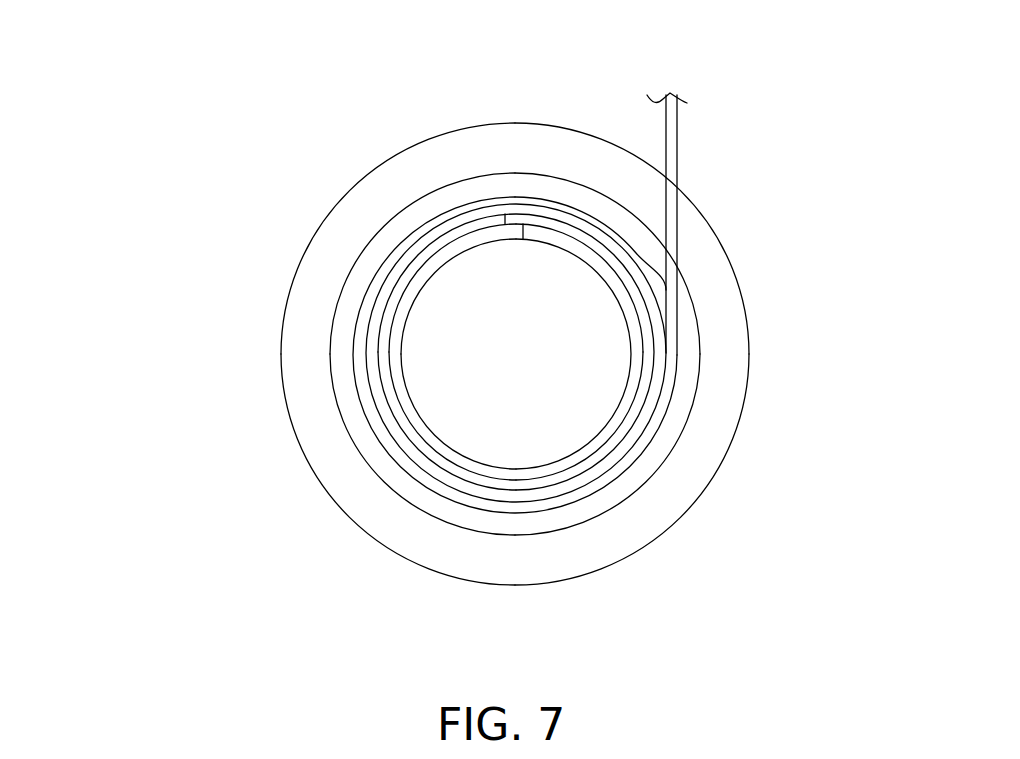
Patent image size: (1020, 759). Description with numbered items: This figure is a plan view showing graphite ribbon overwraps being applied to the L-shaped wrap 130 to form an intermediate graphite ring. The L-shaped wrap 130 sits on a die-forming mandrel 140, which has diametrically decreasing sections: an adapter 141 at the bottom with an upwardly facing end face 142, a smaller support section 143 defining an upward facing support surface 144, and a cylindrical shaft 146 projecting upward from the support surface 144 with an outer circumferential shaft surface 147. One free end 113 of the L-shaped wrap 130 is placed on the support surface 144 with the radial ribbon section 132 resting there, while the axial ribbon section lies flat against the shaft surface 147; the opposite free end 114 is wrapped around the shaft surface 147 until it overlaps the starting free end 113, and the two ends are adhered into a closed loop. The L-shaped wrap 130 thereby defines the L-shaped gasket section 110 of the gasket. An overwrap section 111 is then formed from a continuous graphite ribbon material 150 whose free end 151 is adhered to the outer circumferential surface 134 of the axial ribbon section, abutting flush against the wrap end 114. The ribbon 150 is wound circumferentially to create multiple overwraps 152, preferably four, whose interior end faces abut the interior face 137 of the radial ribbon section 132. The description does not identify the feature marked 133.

The L-shaped gasket section 110 is at (352, 252).
The overwrap section 111 is at (429, 210).
The free end 113 is at (503, 240).
The free end 114 is at (525, 226).
The L-shaped wrap 130 is at (318, 381).
The radial ribbon section 132 is at (423, 498).
The inner surface 133 is at (420, 310).
The outer circumferential surface 134 is at (481, 490).
The interior face 137 is at (666, 420).
The die-forming mandrel 140 is at (710, 496).
The adapter 141 is at (748, 367).
The end face 142 is at (727, 326).
The support section 143 is at (637, 491).
The support surface 144 is at (538, 518).
The cylindrical shaft 146 is at (448, 420).
The outer circumferential shaft surface 147 is at (395, 404).
The graphite ribbon material 150 is at (690, 122).
The free end 151 is at (507, 214).
The overwraps 152 is at (628, 262).